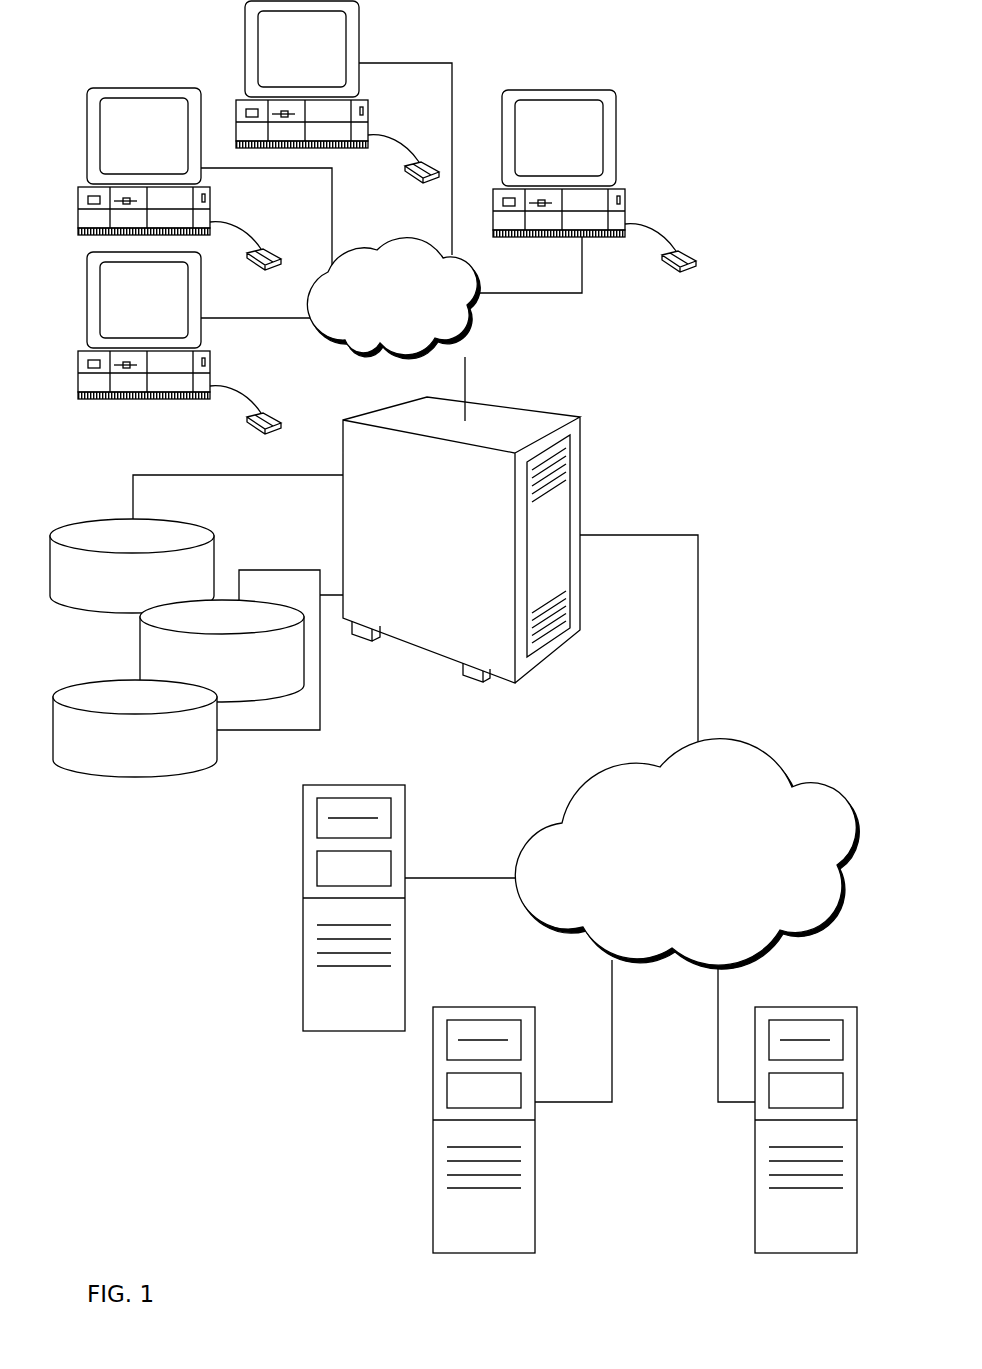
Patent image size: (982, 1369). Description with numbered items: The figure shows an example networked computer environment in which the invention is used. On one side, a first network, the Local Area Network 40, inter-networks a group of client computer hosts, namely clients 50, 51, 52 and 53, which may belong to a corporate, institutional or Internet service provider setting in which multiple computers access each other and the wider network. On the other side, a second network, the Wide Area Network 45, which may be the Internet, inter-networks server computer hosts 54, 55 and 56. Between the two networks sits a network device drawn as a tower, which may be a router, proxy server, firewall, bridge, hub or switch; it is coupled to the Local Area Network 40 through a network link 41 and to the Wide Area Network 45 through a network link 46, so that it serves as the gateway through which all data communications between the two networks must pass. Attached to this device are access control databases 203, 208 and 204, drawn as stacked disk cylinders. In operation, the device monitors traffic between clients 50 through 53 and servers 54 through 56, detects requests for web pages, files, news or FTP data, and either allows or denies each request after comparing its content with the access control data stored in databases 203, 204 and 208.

The client computer host 50 is at (131, 309).
The client computer host 51 is at (131, 145).
The client computer host 52 is at (290, 54).
The client computer host 53 is at (546, 147).
The Local Area Network (LAN) 40 is at (382, 321).
The network link 41 is at (467, 361).
The access control database 203 is at (112, 593).
The access control database 208 is at (201, 673).
The access control database 204 is at (114, 753).
The network link 46 is at (698, 600).
The Wide Area Network (WAN) 45 is at (675, 891).
The server computer host 54 is at (341, 1013).
The server computer host 55 is at (793, 1231).
The server computer host 56 is at (471, 1231).